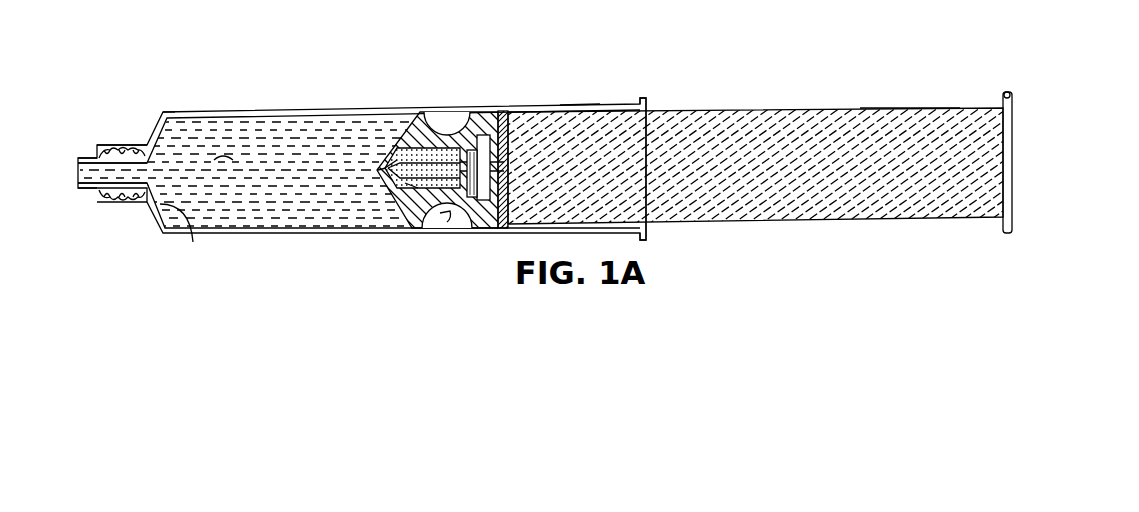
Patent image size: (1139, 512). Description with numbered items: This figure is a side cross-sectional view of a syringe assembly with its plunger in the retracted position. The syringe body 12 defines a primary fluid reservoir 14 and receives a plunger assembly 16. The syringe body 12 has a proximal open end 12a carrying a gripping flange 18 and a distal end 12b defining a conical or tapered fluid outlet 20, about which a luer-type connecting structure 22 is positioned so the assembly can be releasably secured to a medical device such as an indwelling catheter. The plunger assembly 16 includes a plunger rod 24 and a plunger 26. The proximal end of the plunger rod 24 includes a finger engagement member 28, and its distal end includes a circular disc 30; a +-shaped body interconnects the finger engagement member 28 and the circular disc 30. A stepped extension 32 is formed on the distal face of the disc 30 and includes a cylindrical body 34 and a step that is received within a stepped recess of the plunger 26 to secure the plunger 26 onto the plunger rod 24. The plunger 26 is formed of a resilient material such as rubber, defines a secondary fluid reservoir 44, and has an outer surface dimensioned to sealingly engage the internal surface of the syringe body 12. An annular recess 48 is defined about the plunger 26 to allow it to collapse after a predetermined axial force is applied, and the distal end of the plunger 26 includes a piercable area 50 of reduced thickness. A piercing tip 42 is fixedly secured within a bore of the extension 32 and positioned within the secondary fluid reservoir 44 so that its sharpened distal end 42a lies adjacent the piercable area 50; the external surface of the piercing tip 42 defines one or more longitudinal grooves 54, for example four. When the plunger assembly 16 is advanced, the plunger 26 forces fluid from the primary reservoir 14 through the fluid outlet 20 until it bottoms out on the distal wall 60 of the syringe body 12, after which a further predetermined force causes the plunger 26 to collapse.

The syringe body 12 is at (271, 112).
The proximal open end 12a is at (572, 105).
The distal end 12b is at (176, 112).
The primary fluid reservoir 14 is at (223, 156).
The plunger assembly 16 is at (770, 110).
The gripping flange 18 is at (645, 99).
The fluid outlet 20 is at (88, 155).
The connecting structure 22 is at (110, 202).
The plunger rod 24 is at (873, 120).
The plunger 26 is at (405, 130).
The finger engagement member 28 is at (1012, 93).
The circular disc 30 is at (503, 111).
The stepped extension 32 is at (470, 200).
The cylindrical body 34 is at (490, 200).
The piercing tip 42 is at (433, 165).
The sharpened distal end 42a is at (393, 167).
The secondary fluid reservoir 44 is at (415, 188).
The annular recess 48 is at (445, 215).
The piercable area 50 is at (383, 172).
The longitudinal grooves 54 is at (460, 165).
The distal wall 60 is at (190, 242).